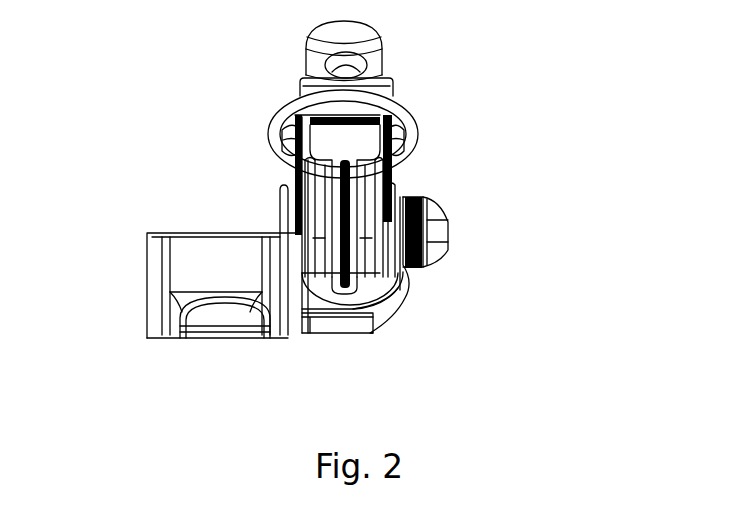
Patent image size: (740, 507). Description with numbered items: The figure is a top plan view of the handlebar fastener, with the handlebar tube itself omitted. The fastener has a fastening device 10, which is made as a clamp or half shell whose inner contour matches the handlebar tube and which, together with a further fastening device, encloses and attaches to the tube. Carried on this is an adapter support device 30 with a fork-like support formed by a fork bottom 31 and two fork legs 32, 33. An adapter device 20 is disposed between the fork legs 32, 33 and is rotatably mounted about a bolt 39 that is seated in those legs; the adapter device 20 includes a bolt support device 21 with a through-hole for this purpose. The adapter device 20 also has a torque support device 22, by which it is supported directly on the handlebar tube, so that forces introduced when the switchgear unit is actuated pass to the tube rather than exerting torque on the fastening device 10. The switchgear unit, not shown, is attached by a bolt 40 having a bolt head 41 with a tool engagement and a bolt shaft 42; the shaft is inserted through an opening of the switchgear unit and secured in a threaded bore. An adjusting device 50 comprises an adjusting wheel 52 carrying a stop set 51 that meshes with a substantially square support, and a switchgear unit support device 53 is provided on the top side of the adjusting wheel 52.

The fastening device 10 is at (230, 258).
The adapter device 20 is at (333, 143).
The bolt support device 21 is at (365, 258).
The torque support device 22 is at (350, 290).
The adapter support device 30 is at (405, 311).
The fork bottom 31 is at (330, 324).
The fork leg 32 is at (283, 205).
The fork leg 33 is at (427, 241).
The bolt 39 is at (448, 220).
The bolt 40 is at (400, 60).
The bolt head 41 is at (323, 35).
The bolt shaft 42 is at (312, 73).
The adjusting device 50 is at (417, 123).
The stop set 51 is at (282, 163).
The adjusting wheel 52 is at (405, 150).
The switchgear unit support device 53 is at (397, 88).